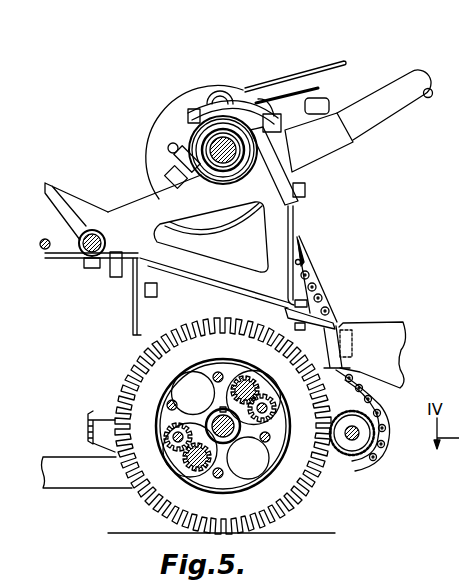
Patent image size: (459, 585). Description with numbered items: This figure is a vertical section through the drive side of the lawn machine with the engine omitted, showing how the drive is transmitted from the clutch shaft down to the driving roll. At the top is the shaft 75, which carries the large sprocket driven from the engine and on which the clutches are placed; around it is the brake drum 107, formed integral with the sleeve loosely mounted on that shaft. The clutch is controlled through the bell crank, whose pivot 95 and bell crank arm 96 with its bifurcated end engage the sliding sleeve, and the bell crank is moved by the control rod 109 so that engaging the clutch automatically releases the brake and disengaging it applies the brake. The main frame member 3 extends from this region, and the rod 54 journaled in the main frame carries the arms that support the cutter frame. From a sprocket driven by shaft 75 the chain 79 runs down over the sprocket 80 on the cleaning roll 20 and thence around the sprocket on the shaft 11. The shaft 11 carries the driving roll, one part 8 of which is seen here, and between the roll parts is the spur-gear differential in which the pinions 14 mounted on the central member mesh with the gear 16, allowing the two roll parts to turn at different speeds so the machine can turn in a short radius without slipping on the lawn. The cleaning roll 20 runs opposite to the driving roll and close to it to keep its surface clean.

The main frame member 3 is at (387, 113).
The driving roll part 8 is at (277, 492).
The shaft 11 is at (207, 410).
The pinions 14 is at (248, 380).
The gear 16 is at (248, 458).
The cleaning roll 20 is at (347, 466).
The rod 54 is at (102, 228).
The shaft 75 is at (205, 141).
The chain 79 is at (320, 290).
The sprocket 80 is at (384, 441).
The pivot 95 is at (268, 95).
The bell crank arm 96 is at (240, 98).
The brake drum 107 is at (204, 79).
The control rod 109 is at (343, 61).